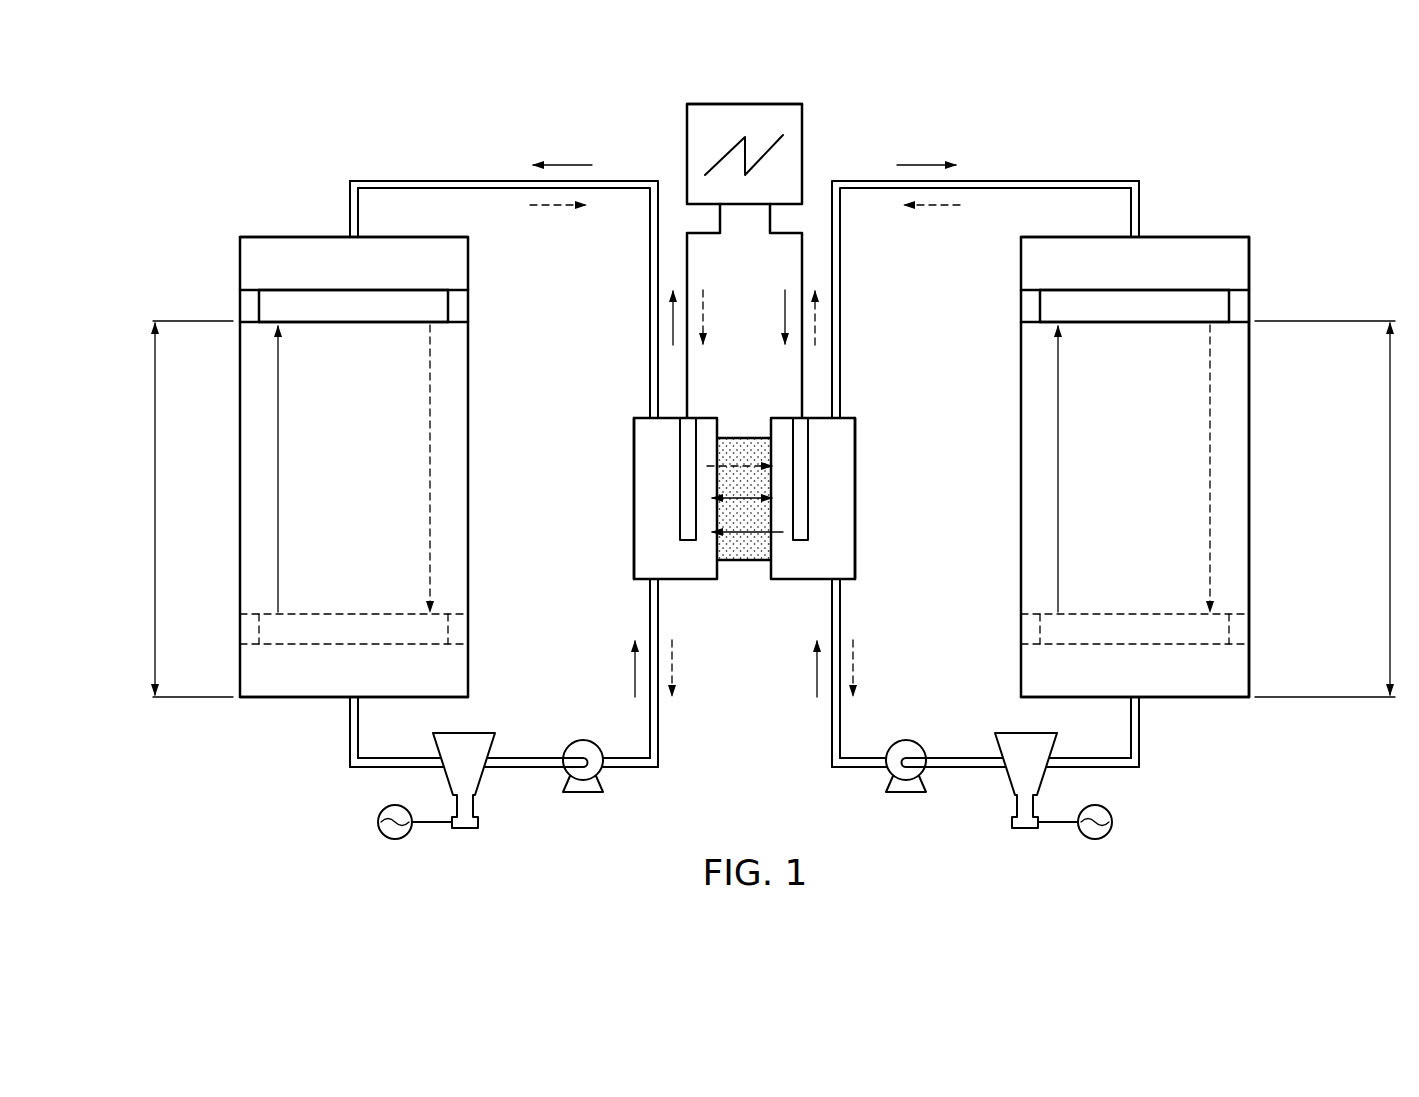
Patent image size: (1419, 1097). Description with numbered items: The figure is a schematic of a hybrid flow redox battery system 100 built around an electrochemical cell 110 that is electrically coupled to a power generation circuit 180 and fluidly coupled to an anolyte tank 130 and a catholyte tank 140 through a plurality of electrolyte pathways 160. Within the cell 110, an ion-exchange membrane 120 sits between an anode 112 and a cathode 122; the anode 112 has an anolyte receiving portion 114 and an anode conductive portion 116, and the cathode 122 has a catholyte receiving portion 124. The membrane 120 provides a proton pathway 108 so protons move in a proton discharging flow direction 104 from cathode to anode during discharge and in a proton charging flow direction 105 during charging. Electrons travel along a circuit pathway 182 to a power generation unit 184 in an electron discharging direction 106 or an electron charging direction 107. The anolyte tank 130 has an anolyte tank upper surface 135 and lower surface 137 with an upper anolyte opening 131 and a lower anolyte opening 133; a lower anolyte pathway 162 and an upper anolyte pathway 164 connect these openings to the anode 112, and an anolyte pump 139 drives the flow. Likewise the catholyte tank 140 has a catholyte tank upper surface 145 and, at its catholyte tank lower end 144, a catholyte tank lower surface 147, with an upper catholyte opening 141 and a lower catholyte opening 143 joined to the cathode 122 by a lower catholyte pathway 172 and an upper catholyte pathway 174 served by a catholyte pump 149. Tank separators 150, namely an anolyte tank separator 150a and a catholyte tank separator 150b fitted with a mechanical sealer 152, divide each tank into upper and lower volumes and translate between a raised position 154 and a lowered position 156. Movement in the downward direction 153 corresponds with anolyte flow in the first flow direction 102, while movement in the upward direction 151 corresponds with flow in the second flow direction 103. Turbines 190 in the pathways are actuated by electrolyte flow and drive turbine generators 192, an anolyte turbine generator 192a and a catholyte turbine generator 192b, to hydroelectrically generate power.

The hybrid flow redox battery system 100 is at (765, 461).
The first flow direction 102 is at (785, 698).
The second flow direction 103 is at (880, 690).
The proton discharging flow direction 104 is at (720, 535).
The proton charging flow direction 105 is at (745, 462).
The electron discharging direction 106 is at (673, 322).
The electron charging direction 107 is at (705, 310).
The proton pathway 108 is at (728, 500).
The electrochemical cell 110 is at (742, 532).
The anode 112 is at (624, 515).
The anolyte receiving portion 114 is at (634, 490).
The anode conductive portion 116 is at (680, 438).
The ion-exchange membrane 120 is at (735, 575).
The cathode 122 is at (862, 515).
The catholyte receiving portion 124 is at (856, 505).
The anolyte tank 130 is at (294, 481).
The upper anolyte opening 131 is at (350, 245).
The lower anolyte opening 133 is at (350, 690).
The anolyte tank upper surface 135 is at (280, 237).
The anolyte tank lower surface 137 is at (290, 700).
The anolyte pump 139 is at (585, 794).
The catholyte tank 140 is at (1190, 467).
The upper catholyte opening 141 is at (1139, 245).
The lower catholyte opening 143 is at (1139, 690).
The catholyte tank lower end 144 is at (1295, 482).
The catholyte tank upper surface 145 is at (1208, 237).
The catholyte tank lower surface 147 is at (1198, 700).
The catholyte pump 149 is at (905, 794).
The tank separators 150 is at (741, 273).
The anolyte tank separator 150a is at (385, 290).
The catholyte tank separator 150b is at (1100, 290).
The upward direction 151 is at (282, 460).
The mechanical sealer 152 is at (243, 310).
The downward direction 153 is at (428, 494).
The raised position 154 is at (744, 371).
The lowered position 156 is at (744, 579).
The electrolyte pathways 160 is at (745, 682).
The lower anolyte pathway 162 is at (535, 770).
The upper anolyte pathway 164 is at (490, 188).
The lower catholyte pathway 172 is at (955, 770).
The upper catholyte pathway 174 is at (998, 188).
The power generation circuit 180 is at (787, 106).
The circuit pathway 182 is at (687, 270).
The power generation unit 184 is at (776, 104).
The turbines 190 is at (440, 775).
The turbine generators 192 is at (742, 859).
The anolyte turbine generator 192a is at (380, 824).
The catholyte turbine generator 192b is at (1110, 825).